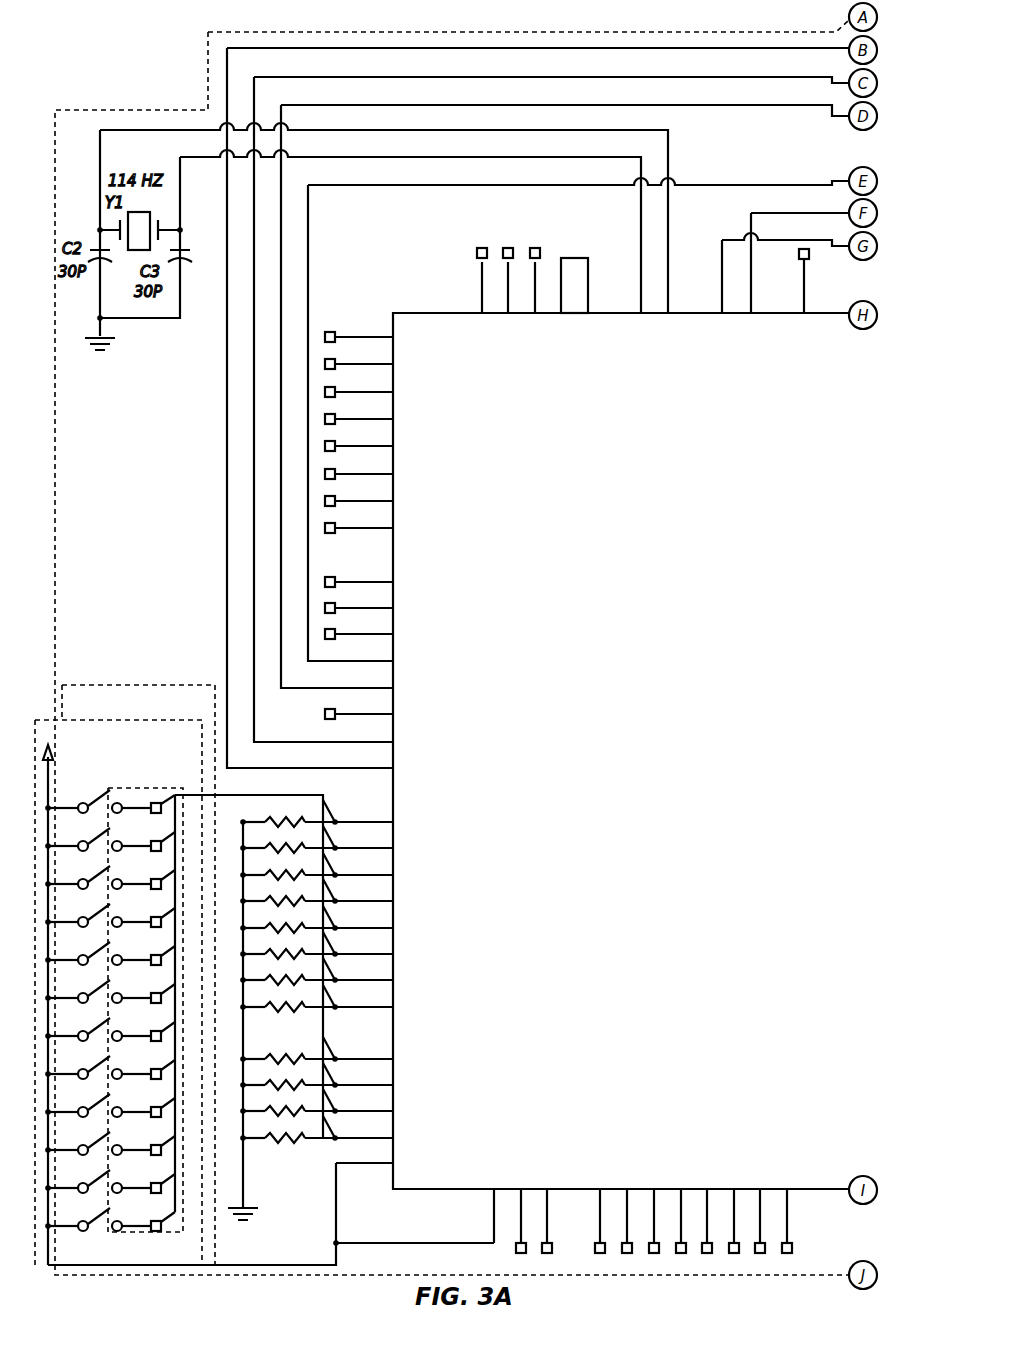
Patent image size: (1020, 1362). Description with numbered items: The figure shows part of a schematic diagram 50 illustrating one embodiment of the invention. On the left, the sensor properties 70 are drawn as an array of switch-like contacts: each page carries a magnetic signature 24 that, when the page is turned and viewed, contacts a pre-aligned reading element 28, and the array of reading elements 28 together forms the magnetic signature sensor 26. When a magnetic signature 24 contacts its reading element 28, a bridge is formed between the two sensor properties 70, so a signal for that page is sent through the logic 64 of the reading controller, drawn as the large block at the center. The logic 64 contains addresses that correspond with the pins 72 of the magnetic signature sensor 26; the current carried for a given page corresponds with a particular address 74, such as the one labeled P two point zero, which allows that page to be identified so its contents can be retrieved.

The schematic diagram 50 is at (133, 68).
The logic 64 is at (457, 330).
The sensor properties 70 is at (125, 975).
The pins 72 is at (158, 802).
The address 74 is at (445, 825).
The magnetic signature 24 is at (82, 803).
The magnetic signature sensor 26 is at (118, 788).
The reading element 28 is at (127, 802).